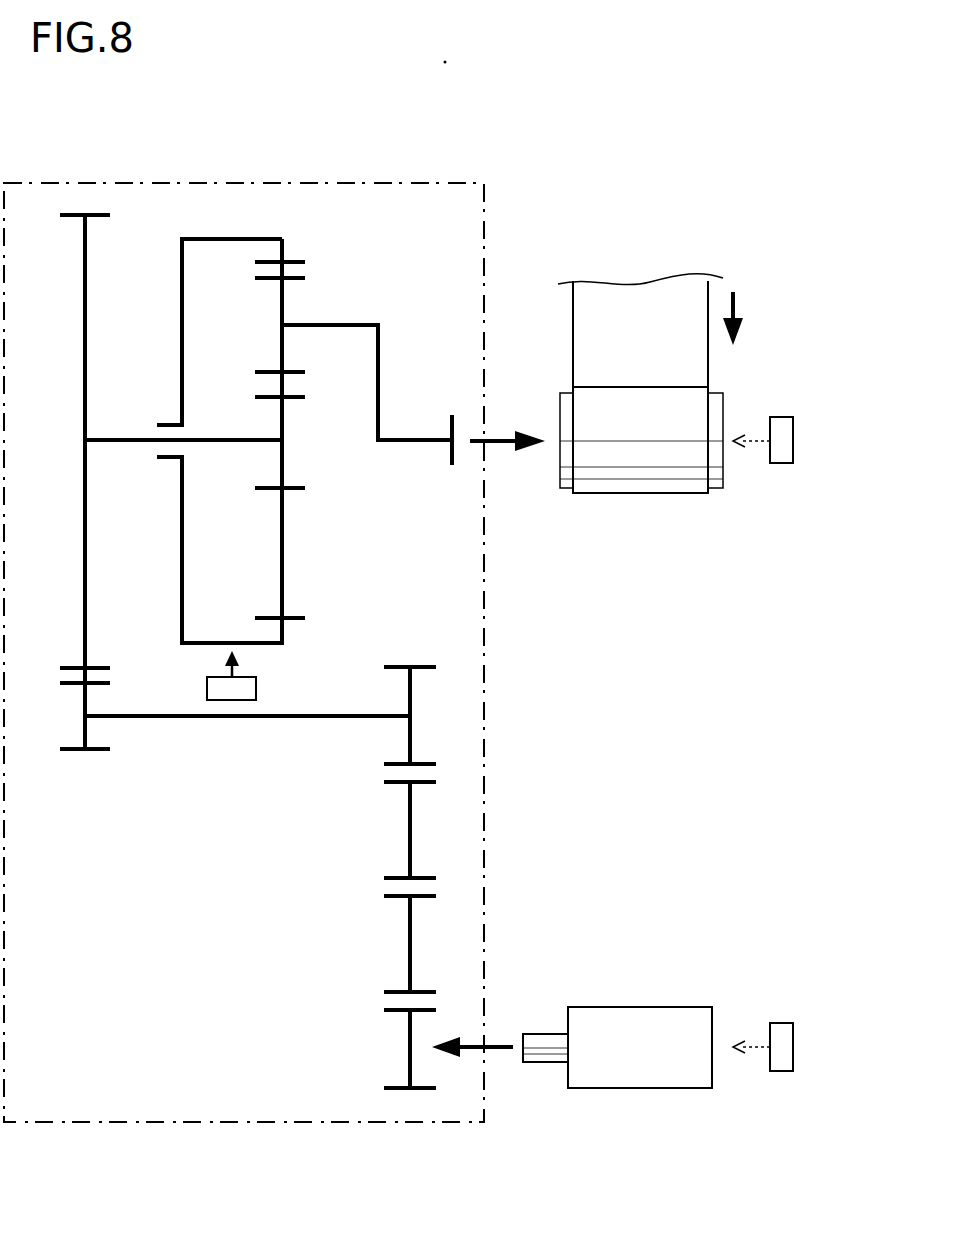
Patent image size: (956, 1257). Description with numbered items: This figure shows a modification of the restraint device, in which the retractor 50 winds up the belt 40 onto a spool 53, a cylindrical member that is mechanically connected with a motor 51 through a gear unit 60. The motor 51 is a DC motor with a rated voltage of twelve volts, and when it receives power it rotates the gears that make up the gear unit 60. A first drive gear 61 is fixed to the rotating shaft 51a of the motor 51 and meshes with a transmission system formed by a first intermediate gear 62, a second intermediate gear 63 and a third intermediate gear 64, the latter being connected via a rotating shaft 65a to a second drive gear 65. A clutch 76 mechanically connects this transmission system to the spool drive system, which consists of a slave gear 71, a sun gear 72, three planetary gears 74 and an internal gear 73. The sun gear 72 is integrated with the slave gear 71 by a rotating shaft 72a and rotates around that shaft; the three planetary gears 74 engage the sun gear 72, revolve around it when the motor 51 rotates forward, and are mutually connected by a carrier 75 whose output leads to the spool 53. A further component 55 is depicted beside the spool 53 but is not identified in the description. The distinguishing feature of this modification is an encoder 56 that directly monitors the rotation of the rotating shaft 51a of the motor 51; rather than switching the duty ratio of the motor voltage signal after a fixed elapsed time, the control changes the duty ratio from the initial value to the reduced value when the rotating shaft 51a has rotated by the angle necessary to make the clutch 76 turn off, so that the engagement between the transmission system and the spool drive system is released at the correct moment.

The belt 40 is at (571, 312).
The retractor 50 is at (593, 134).
The motor 51 is at (638, 1007).
The rotating shaft 51a is at (535, 1034).
The spool 53 is at (559, 410).
The roller rotation sensor 55 is at (780, 417).
The encoder 56 is at (779, 1023).
The gear unit 60 is at (410, 182).
The first drive gear 61 is at (407, 1031).
The first intermediate gear 62 is at (407, 926).
The second intermediate gear 63 is at (407, 812).
The third intermediate gear 64 is at (407, 695).
The second drive gear 65 is at (82, 698).
The rotating shaft 65a is at (218, 719).
The slave gear 71 is at (84, 280).
The sun gear 72 is at (279, 463).
The rotating shaft 72a is at (120, 444).
The internal gear 73 is at (180, 280).
The planetary gears 74 is at (281, 300).
The carrier 75 is at (382, 393).
The clutch 76 is at (260, 688).